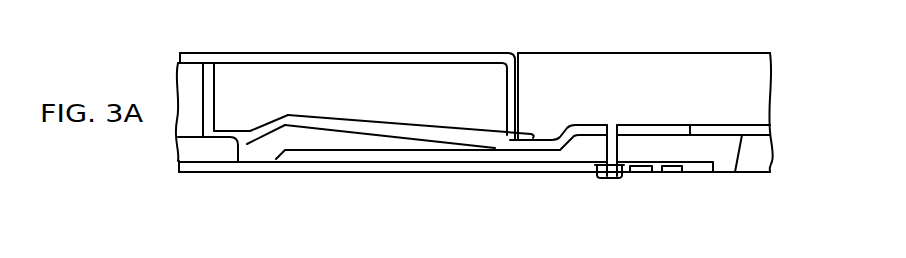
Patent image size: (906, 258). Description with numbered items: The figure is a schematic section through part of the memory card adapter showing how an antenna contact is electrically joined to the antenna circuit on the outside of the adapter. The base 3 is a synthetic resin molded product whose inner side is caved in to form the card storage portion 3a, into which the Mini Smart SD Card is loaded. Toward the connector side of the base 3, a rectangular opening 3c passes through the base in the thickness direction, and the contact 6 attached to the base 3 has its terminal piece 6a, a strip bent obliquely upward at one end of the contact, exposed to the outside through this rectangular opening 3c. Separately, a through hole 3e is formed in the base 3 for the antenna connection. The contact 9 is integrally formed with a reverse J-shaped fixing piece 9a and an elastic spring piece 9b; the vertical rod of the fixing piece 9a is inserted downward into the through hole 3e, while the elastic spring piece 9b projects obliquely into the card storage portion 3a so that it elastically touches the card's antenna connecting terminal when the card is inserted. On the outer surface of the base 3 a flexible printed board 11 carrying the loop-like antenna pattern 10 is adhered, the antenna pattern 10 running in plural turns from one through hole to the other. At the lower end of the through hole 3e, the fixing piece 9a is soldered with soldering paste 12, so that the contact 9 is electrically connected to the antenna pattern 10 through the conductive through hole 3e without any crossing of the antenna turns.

The base 3 is at (332, 153).
The card storage portion 3a is at (253, 98).
The rectangular opening 3c is at (753, 155).
The through hole 3e is at (601, 152).
The contact 6 is at (670, 125).
The terminal piece 6a is at (718, 131).
The contact 9 is at (288, 114).
The fixing piece 9a is at (612, 128).
The elastic spring piece 9b is at (371, 128).
The antenna pattern 10 is at (620, 176).
The flexible printed board 11 is at (408, 165).
The soldering paste 12 is at (606, 178).